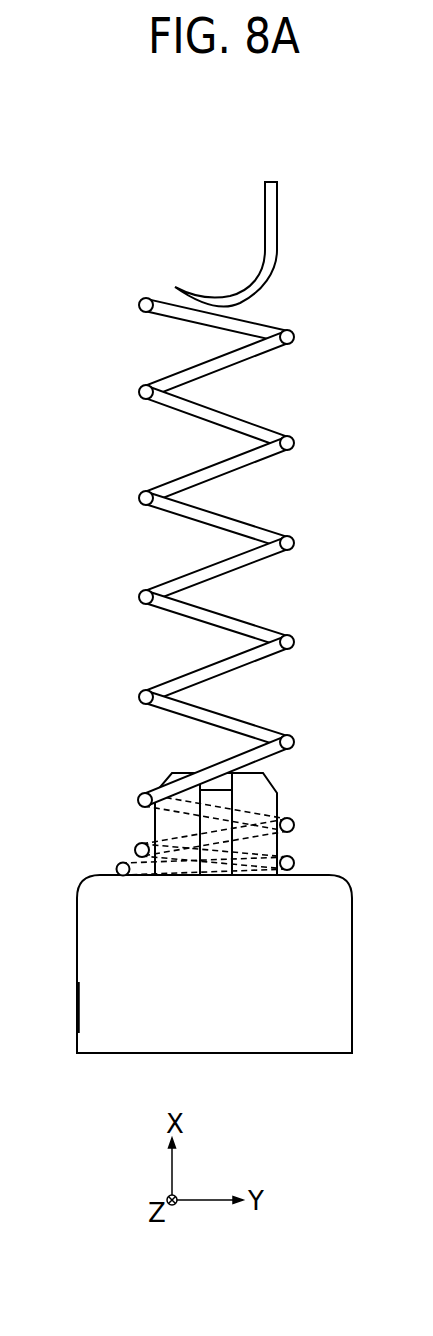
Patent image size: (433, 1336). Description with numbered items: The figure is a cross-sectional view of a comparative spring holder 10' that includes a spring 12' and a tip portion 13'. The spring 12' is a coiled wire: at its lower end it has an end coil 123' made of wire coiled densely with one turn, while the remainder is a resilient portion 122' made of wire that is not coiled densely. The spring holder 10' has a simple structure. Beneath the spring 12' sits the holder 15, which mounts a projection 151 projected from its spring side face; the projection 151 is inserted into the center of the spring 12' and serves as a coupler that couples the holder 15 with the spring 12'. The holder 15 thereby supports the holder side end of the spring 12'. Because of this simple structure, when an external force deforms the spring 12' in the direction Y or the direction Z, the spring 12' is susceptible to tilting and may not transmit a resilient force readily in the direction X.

The spring holder 10' is at (212, 496).
The spring 12' is at (212, 587).
The tip portion 13' is at (256, 244).
The resilient portion 122' is at (228, 571).
The end coil 123' is at (166, 854).
The projection 151 is at (272, 783).
The holder 15 is at (353, 982).